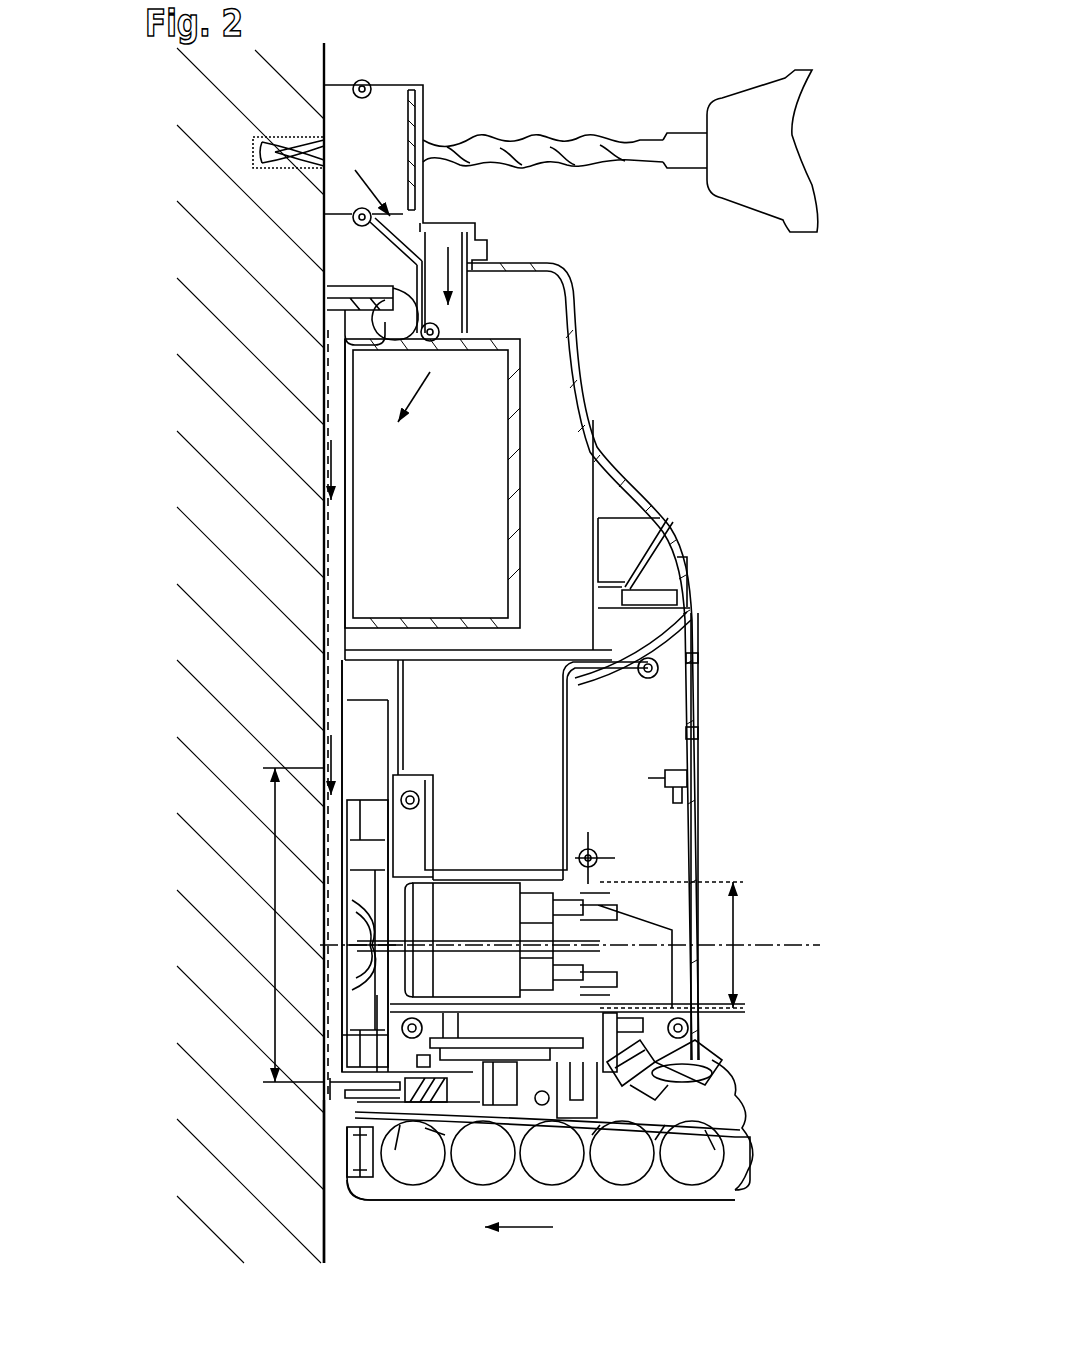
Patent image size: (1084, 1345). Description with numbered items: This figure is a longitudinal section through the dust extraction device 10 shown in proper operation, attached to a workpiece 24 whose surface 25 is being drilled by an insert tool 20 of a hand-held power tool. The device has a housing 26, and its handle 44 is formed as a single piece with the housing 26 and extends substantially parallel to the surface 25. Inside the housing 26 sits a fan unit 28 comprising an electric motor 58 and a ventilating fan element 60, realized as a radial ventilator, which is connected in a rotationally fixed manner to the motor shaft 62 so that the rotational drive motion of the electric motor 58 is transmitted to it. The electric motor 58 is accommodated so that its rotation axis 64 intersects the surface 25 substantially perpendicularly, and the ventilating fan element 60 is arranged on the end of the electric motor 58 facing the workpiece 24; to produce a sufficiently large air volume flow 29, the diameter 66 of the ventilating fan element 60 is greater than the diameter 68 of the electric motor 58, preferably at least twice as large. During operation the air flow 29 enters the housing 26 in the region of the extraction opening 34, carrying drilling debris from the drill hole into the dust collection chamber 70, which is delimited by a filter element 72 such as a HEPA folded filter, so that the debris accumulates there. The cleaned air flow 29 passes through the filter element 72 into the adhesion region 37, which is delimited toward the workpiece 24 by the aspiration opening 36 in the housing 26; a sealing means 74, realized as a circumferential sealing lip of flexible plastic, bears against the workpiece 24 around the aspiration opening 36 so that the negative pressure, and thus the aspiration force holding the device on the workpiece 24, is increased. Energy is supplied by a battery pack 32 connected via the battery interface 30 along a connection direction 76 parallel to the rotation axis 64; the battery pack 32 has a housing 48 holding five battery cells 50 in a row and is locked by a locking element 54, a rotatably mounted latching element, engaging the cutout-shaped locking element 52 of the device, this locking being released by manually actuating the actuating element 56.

The dust extraction device 10 is at (815, 358).
The insert tool / drill bit 20 is at (596, 150).
The workpiece 24 is at (222, 1222).
The surface 25 is at (326, 1242).
The housing 26 is at (683, 498).
The fan unit 28 is at (672, 850).
The air volume flow 29 is at (305, 129).
The battery interface 30 is at (605, 1135).
The battery pack 32 is at (795, 1196).
The extraction opening 34 is at (324, 190).
The aspiration opening 36 is at (324, 577).
The adhesion region 37 is at (345, 709).
The handle 44 is at (758, 709).
The housing 48 is at (717, 1187).
The battery cells 50 is at (610, 1163).
The locking element 52 is at (712, 1053).
The locking element 54 is at (712, 1066).
The actuating element 56 is at (745, 1100).
The electric motor 58 is at (452, 908).
The ventilating fan element 60 is at (363, 1008).
The motor shaft 62 is at (357, 948).
The rotation axis 64 is at (812, 950).
The diameter 66 is at (275, 856).
The diameter 68 is at (735, 917).
The dust collection chamber 70 is at (565, 388).
The filter element 72 is at (375, 403).
The sealing means 74 is at (327, 283).
The connection direction 76 is at (533, 1232).